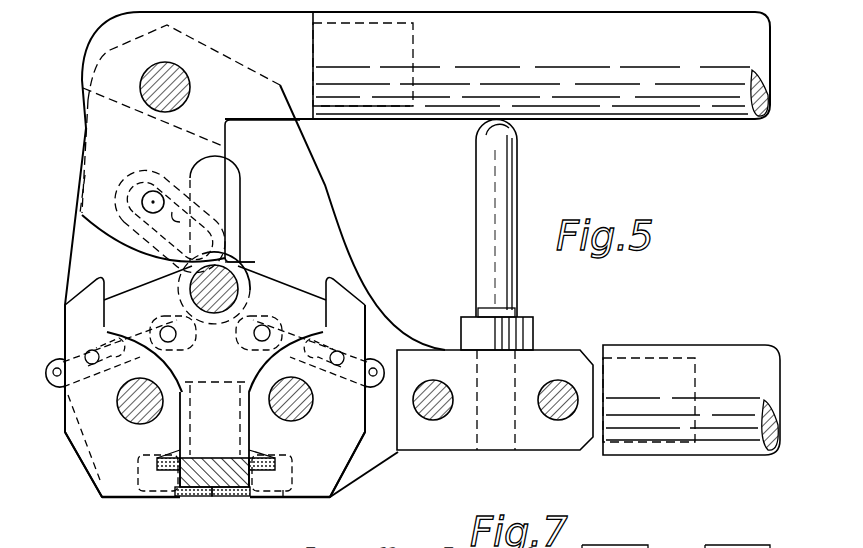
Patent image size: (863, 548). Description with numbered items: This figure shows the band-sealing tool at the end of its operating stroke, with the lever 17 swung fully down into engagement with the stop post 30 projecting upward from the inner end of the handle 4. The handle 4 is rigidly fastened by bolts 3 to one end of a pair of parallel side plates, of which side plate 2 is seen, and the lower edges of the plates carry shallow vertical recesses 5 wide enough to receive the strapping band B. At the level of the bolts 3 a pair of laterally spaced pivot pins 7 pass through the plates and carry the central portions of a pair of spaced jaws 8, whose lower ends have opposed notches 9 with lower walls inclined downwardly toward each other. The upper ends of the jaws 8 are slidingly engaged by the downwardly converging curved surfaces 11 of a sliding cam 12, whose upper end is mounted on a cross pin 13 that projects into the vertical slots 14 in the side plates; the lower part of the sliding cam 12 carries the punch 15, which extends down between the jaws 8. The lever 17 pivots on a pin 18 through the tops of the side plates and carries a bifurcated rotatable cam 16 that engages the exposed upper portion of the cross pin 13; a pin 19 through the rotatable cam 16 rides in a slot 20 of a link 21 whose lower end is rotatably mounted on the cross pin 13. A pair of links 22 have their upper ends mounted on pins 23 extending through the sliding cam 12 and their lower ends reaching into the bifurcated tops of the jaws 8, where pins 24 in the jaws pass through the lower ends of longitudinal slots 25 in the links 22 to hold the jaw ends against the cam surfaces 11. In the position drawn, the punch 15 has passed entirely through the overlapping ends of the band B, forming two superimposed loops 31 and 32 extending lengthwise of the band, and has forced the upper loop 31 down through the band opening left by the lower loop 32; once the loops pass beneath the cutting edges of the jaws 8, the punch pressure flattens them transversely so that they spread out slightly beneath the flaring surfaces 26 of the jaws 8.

The side plate 2 is at (76, 265).
The bolts 3 is at (430, 385).
The handle 4 is at (728, 352).
The recesses 5 is at (283, 498).
The pivot pins 7 is at (128, 420).
The jaws 8 is at (66, 432).
The notches 9 is at (172, 455).
The curved surfaces 11 is at (160, 355).
The sliding cam 12 is at (290, 295).
The cross pin 13 is at (240, 265).
The vertical slots 14 is at (238, 210).
The punch 15 is at (222, 449).
The bifurcated rotatable cam 16 is at (97, 220).
The lever 17 is at (395, 121).
The pin 18 is at (141, 88).
The pin 19 is at (153, 192).
The slot 20 is at (183, 200).
The link 21 is at (258, 262).
The links 22 is at (62, 358).
The pins 23 is at (166, 326).
The pins 24 is at (92, 350).
The longitudinal slots 25 is at (54, 373).
The flaring surfaces 26 is at (172, 494).
The stop post 30 is at (517, 135).
The upper loop 31 is at (200, 496).
The lower loop 32 is at (230, 496).
The strapping band B is at (182, 499).